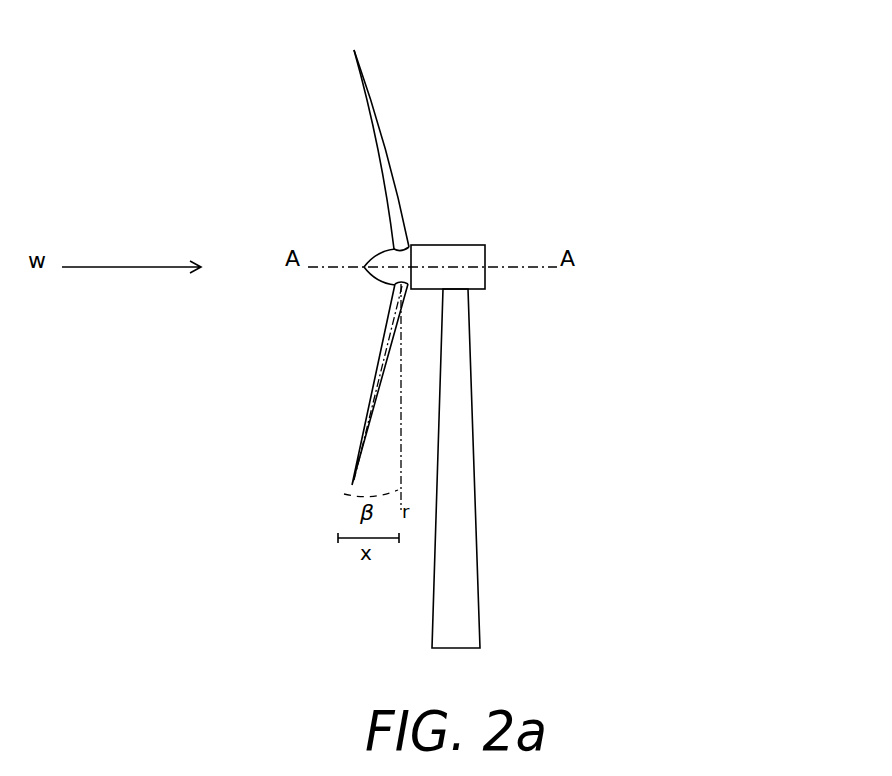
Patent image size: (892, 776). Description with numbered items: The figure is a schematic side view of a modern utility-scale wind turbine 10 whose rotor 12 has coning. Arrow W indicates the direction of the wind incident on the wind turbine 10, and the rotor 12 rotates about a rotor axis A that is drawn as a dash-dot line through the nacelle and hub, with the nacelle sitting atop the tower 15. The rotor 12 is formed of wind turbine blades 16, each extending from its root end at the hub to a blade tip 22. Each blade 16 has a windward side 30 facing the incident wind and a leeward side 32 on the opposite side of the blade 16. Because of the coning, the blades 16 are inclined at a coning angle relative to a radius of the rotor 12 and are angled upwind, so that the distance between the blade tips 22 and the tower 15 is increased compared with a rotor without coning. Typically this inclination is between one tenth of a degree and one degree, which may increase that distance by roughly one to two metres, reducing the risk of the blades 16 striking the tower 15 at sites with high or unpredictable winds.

The wind turbine 10 is at (243, 140).
The rotor 12 is at (330, 230).
The tower 15 is at (462, 473).
The wind turbine blade 16 is at (389, 176).
The blade tip 22 is at (350, 486).
The windward side 30 is at (380, 209).
The leeward side 32 is at (408, 204).